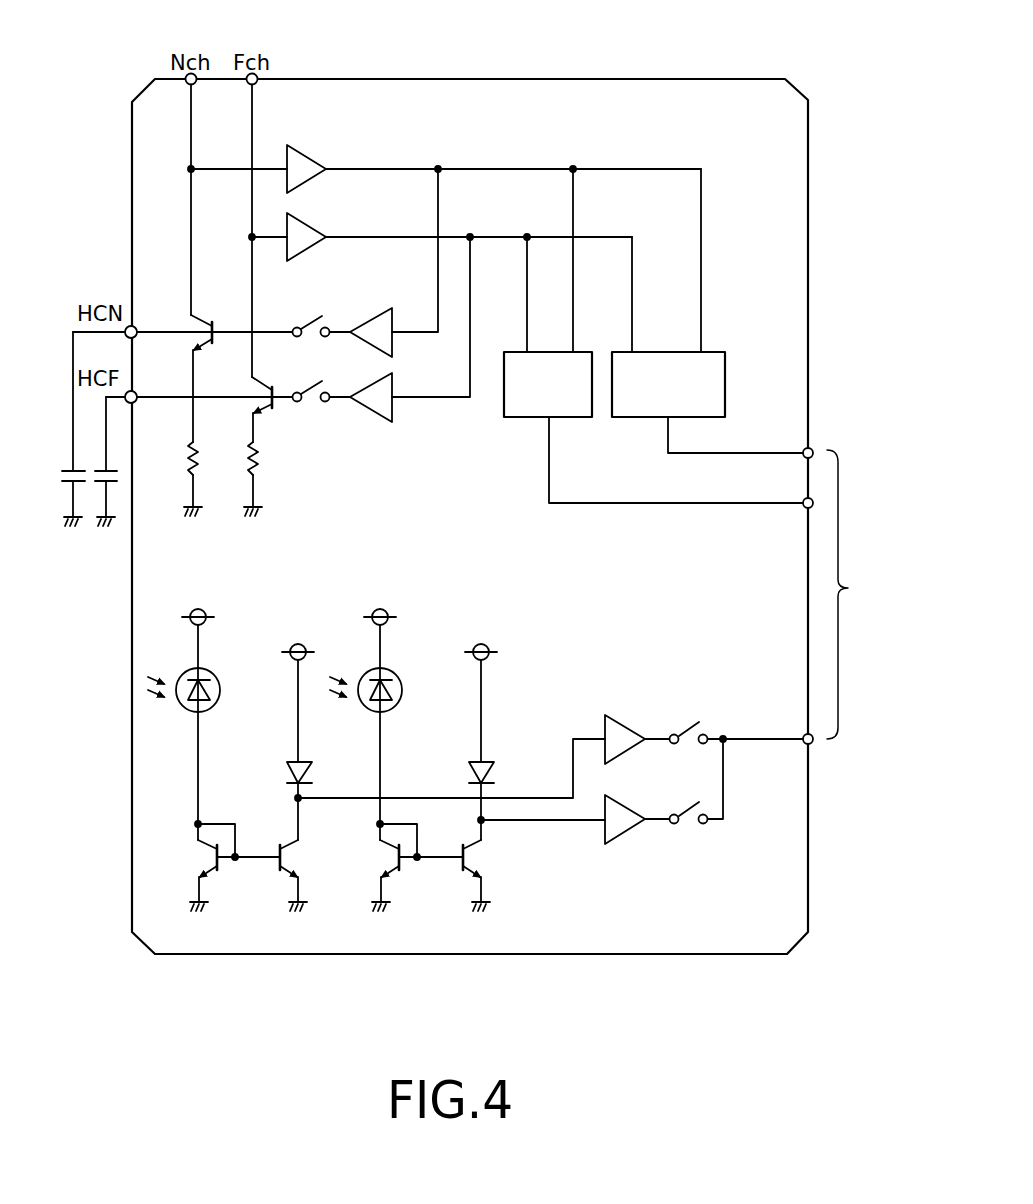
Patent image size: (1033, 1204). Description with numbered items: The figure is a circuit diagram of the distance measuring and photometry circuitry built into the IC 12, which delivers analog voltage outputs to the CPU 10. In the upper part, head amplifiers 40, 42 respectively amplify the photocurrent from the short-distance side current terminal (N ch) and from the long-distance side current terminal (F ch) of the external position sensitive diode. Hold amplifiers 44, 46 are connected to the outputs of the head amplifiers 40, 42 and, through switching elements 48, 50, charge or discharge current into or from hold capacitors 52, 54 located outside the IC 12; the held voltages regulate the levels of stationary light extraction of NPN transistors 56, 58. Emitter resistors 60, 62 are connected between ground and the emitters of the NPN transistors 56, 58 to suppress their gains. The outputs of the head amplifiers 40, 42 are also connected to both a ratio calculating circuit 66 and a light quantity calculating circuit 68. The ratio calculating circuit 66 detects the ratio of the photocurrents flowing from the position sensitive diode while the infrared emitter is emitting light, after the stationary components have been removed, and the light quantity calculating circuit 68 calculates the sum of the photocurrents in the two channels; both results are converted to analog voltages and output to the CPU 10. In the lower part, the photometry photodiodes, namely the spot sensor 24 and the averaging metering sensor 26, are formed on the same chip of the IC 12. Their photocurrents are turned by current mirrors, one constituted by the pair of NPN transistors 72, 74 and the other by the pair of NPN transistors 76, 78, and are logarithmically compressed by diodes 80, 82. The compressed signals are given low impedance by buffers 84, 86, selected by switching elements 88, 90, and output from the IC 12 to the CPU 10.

The CPU 10 is at (910, 605).
The IC 12 is at (461, 79).
The spot sensor 24 is at (177, 712).
The averaging metering sensor 26 is at (405, 686).
The head amplifier 40 is at (302, 157).
The head amplifier 42 is at (315, 230).
The hold amplifier 44 is at (395, 315).
The hold amplifier 46 is at (388, 407).
The switching element 48 is at (330, 313).
The switching element 50 is at (315, 407).
The hold capacitor 52 is at (53, 477).
The hold capacitor 54 is at (119, 490).
The NPN transistor 56 is at (205, 312).
The NPN transistor 58 is at (282, 407).
The emitter resistor 60 is at (183, 458).
The emitter resistor 62 is at (270, 465).
The ratio calculating circuit 66 is at (515, 420).
The light quantity calculating circuit 68 is at (725, 368).
The NPN transistor 72 is at (197, 858).
The NPN transistor 74 is at (285, 880).
The NPN transistor 76 is at (405, 872).
The NPN transistor 78 is at (485, 857).
The diode 80 is at (277, 775).
The diode 82 is at (495, 773).
The buffer 84 is at (618, 722).
The buffer 86 is at (618, 827).
The switching element 88 is at (708, 722).
The switching element 90 is at (692, 832).